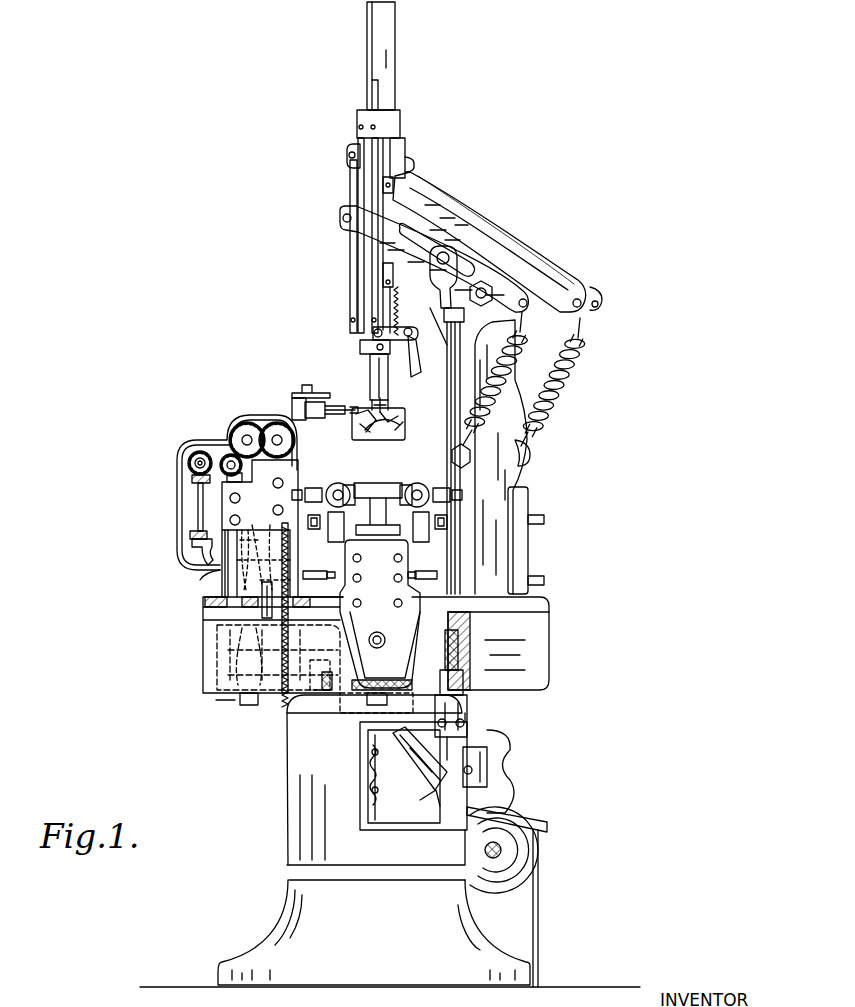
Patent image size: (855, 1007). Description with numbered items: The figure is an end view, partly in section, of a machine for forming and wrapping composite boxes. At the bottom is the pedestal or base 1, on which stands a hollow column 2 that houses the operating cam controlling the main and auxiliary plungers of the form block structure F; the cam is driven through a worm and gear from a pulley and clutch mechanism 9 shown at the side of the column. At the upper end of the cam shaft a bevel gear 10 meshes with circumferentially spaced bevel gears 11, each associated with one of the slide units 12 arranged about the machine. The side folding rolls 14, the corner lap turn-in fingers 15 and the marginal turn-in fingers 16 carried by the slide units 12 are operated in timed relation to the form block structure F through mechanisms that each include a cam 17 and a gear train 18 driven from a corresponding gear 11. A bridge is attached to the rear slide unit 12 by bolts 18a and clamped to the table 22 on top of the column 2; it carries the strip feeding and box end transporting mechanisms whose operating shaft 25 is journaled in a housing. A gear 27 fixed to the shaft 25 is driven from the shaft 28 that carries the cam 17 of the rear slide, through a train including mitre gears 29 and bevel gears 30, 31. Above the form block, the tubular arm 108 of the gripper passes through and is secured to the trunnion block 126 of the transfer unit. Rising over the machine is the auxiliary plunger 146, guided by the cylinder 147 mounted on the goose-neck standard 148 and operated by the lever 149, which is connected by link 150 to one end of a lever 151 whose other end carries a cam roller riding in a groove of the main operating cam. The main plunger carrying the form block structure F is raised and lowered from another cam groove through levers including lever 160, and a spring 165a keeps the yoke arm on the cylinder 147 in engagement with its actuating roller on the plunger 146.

The pedestal or base 1 is at (280, 912).
The hollow column 2 is at (288, 835).
The pulley and clutch mechanism 9 is at (540, 863).
The bevel gear 10 is at (408, 690).
The bevel gears 11 is at (330, 672).
The slide units 12 is at (520, 520).
The side folding rolls 14 is at (418, 483).
The corner lap turn-in fingers 15 is at (338, 530).
The marginal turn-in fingers 16 is at (335, 571).
The cam 17 is at (240, 580).
The gear train 18 is at (292, 618).
The bolts 18a is at (228, 498).
The table 22 is at (203, 662).
The operating shaft 25 is at (262, 438).
The gear 27 is at (290, 447).
The shaft 28 is at (220, 572).
The mitre gears 29 is at (200, 546).
The bevel gear 30 is at (196, 478).
The bevel gear 31 is at (190, 442).
The tubular arm 108 is at (332, 404).
The trunnion block 126 is at (310, 402).
The auxiliary plunger 146 is at (395, 78).
The cylinder 147 is at (390, 128).
The goose-neck standard 148 is at (443, 208).
The lever 149 is at (550, 262).
The link 150 is at (470, 710).
The lever 151 is at (500, 770).
The lever 160 is at (428, 745).
The spring 165a is at (398, 312).
The form block structure F is at (400, 415).